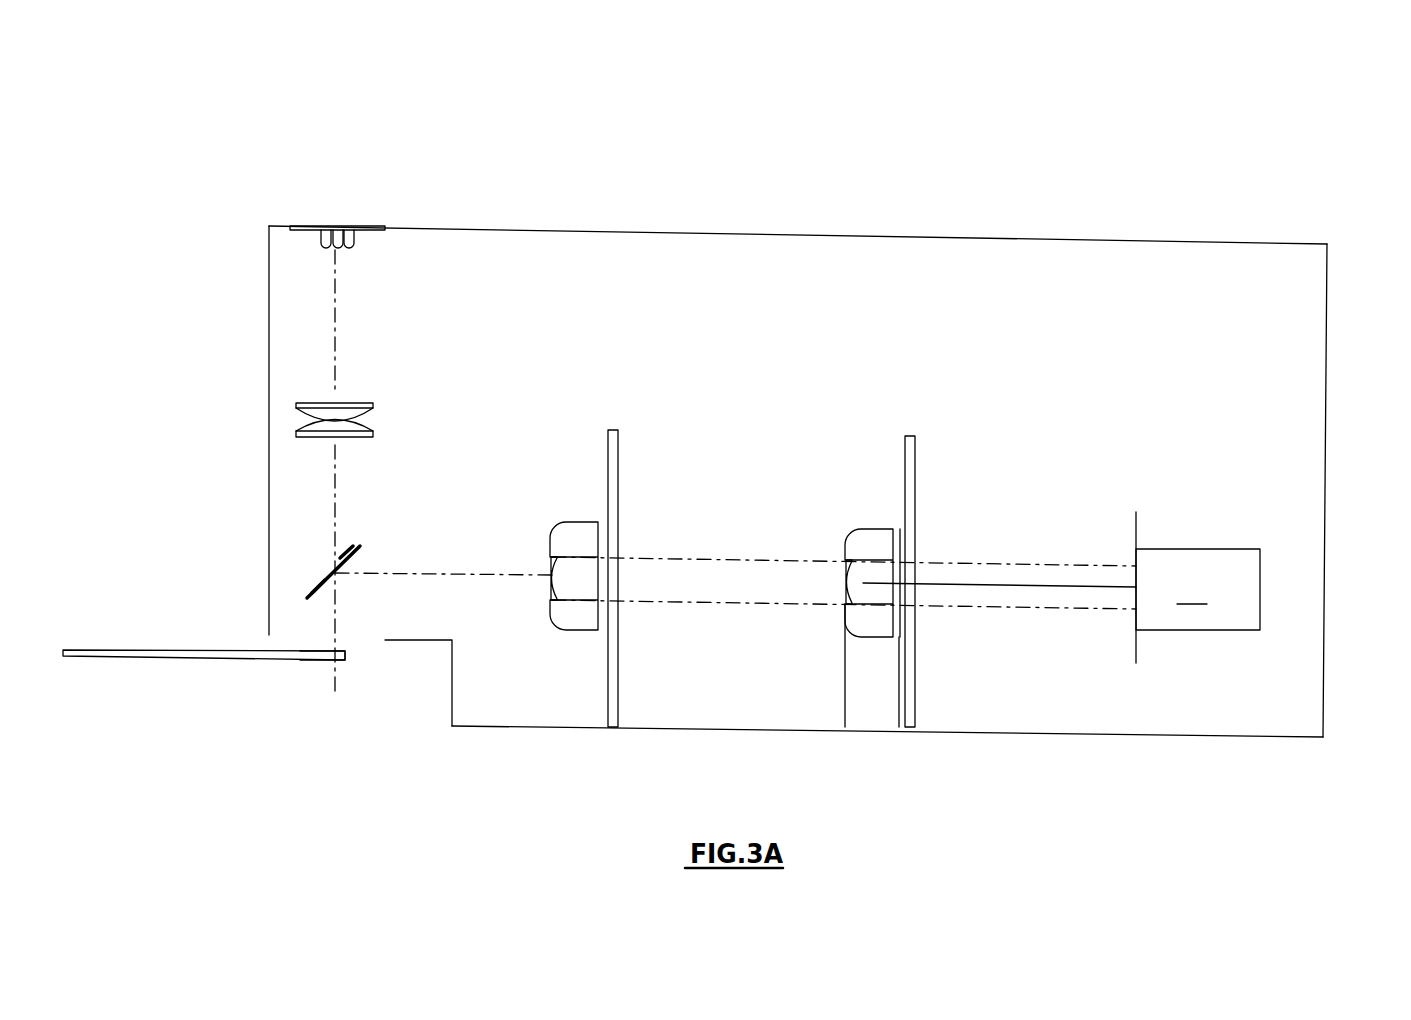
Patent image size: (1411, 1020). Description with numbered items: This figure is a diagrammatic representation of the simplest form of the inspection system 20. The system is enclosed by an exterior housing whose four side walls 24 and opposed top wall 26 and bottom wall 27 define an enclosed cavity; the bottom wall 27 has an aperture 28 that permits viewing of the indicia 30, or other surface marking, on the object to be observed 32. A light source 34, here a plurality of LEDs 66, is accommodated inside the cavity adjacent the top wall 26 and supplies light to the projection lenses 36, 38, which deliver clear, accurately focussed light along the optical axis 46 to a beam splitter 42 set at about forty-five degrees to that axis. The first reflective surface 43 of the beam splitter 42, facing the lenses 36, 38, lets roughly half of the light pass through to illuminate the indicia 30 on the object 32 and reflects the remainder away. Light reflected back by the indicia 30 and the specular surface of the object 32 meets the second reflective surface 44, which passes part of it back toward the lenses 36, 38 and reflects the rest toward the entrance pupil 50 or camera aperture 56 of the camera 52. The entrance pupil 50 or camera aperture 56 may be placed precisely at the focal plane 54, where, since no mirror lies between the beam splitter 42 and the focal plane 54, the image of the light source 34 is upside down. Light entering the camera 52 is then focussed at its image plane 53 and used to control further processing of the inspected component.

The inspection system 20 is at (1030, 152).
The side walls 24 is at (268, 335).
The top wall 26 is at (700, 232).
The bottom wall 27 is at (768, 734).
The aperture 28 is at (362, 640).
The indicia 30 is at (335, 656).
The object to be observed 32 is at (152, 660).
The light source 34 is at (353, 250).
The projection lens 36 is at (296, 407).
The projection lens 38 is at (296, 434).
The beam splitter 42 is at (316, 577).
The first reflective surface 43 is at (330, 563).
The second reflective surface 44 is at (330, 585).
The optical axis 46 is at (337, 481).
The entrance pupil 50 is at (550, 596).
The camera 52 is at (1198, 589).
The image plane 53 is at (1134, 656).
The focal plane 54 is at (620, 447).
The camera aperture 56 is at (845, 600).
The LEDs 66 is at (338, 246).